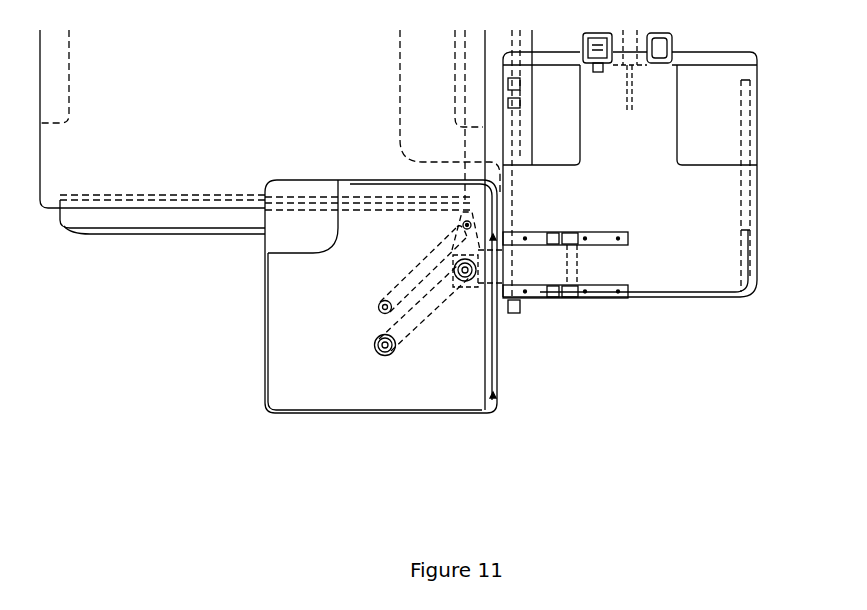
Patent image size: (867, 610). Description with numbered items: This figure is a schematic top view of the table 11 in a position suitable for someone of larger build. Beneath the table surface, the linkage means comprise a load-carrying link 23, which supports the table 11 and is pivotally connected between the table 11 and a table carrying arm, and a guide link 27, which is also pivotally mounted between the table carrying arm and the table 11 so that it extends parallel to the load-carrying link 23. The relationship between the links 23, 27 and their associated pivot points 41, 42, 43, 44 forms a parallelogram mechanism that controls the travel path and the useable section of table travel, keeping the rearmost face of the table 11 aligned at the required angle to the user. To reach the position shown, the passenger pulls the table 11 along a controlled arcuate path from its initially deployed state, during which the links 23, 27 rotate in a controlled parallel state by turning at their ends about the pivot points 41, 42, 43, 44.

The table 11 is at (488, 416).
The load-carrying link 23 is at (413, 284).
The guide link 27 is at (463, 307).
The pivot point 41 is at (370, 295).
The pivot point 42 is at (455, 213).
The pivot point 43 is at (456, 253).
The pivot point 44 is at (379, 369).